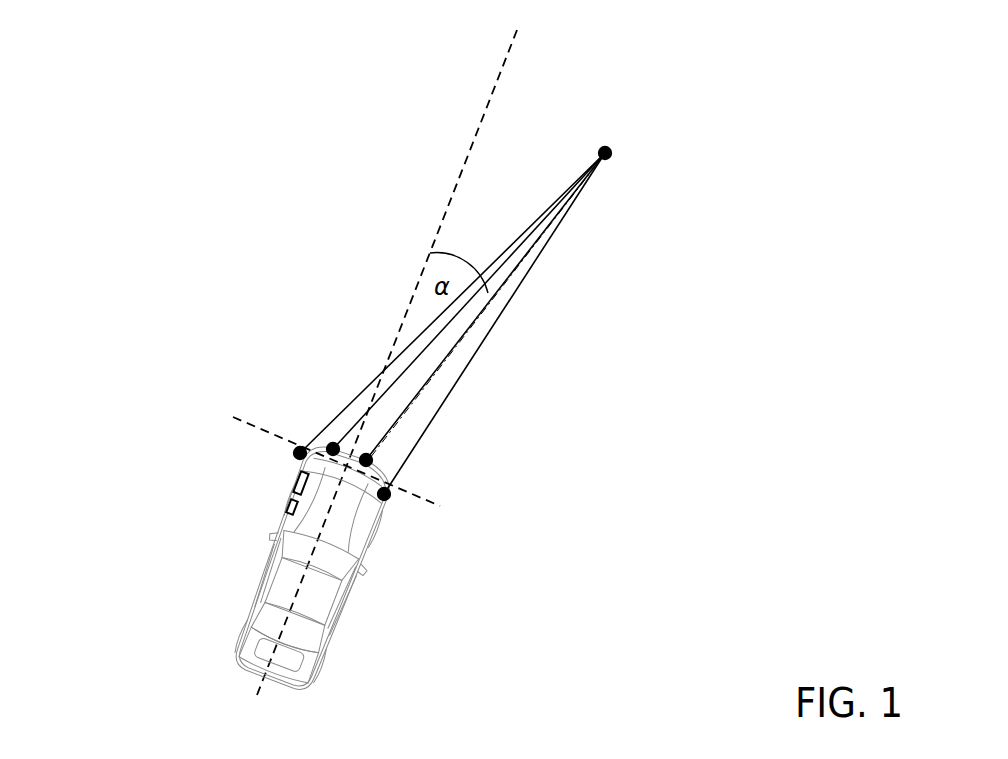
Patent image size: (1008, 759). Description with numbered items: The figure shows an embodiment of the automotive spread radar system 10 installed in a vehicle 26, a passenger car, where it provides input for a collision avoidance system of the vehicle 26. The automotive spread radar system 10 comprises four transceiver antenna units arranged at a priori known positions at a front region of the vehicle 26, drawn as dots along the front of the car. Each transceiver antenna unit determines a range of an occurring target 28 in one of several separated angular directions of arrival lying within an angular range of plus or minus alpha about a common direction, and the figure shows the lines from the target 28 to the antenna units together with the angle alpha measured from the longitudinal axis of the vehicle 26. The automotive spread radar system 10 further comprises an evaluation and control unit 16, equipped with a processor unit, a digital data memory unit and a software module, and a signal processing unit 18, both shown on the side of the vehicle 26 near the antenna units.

The automotive spread radar system 10 is at (188, 423).
The evaluation and control unit 16 is at (293, 470).
The signal processing unit 18 is at (287, 503).
The vehicle 26 is at (337, 632).
The target 28 is at (613, 152).